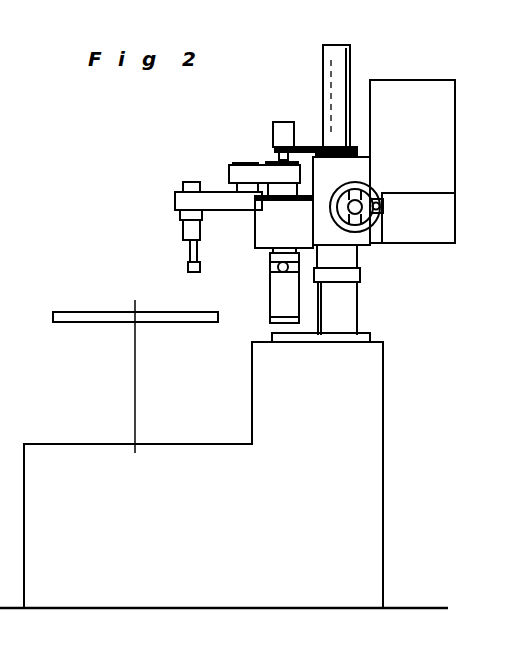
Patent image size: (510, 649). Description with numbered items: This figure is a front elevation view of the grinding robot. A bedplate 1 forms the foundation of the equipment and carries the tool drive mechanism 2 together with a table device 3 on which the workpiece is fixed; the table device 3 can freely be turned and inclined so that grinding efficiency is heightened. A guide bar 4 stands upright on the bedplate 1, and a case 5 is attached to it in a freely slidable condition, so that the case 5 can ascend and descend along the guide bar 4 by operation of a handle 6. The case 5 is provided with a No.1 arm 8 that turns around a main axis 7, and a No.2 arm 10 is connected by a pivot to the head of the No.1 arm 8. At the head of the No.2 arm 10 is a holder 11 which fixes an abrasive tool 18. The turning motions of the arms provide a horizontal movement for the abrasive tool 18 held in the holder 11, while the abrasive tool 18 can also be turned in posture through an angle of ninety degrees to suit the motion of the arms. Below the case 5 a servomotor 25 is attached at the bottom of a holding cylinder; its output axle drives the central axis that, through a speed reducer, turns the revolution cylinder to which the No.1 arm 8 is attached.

The bedplate 1 is at (378, 494).
The tool drive mechanism 2 is at (412, 64).
The table device 3 is at (102, 312).
The guide bar 4 is at (323, 73).
The case 5 is at (257, 228).
The handle 6 is at (368, 190).
The main axis 7 is at (279, 154).
The No.1 arm 8 is at (246, 163).
The No.2 arm 10 is at (175, 200).
The holder 11 is at (190, 248).
The abrasive tool 18 is at (188, 268).
The servomotor 25 is at (272, 308).